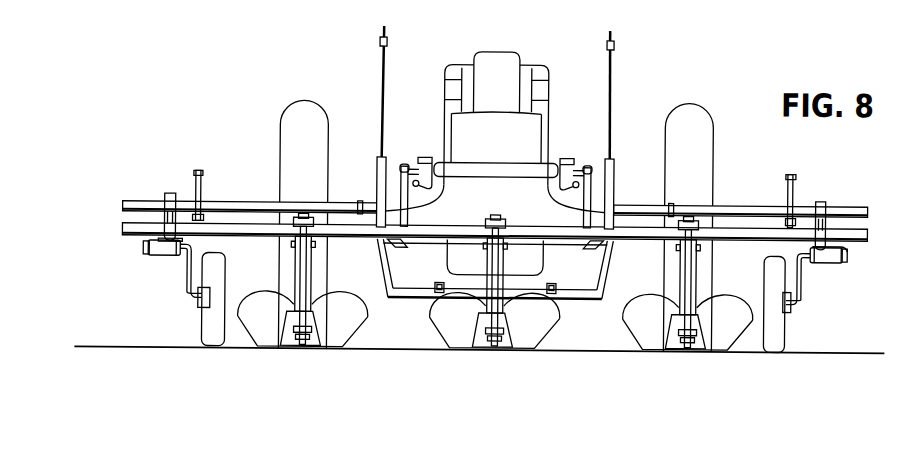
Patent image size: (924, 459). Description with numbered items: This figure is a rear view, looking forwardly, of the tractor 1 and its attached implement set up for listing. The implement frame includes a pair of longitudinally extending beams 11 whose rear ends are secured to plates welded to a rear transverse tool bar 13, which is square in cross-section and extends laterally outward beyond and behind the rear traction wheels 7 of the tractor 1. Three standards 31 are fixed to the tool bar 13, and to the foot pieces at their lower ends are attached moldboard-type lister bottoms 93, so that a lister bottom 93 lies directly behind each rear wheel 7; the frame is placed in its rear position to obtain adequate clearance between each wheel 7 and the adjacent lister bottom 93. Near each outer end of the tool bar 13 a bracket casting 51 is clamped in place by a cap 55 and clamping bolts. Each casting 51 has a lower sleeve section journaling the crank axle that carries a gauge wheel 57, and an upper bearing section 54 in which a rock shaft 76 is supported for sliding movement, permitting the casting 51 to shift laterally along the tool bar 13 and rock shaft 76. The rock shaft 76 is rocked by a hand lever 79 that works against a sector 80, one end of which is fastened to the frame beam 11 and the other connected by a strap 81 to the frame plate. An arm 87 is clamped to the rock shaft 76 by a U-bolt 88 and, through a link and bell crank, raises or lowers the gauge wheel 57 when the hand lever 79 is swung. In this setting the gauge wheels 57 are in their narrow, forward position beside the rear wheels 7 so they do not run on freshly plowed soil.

The tractor 1 is at (518, 47).
The rear traction wheels 7 is at (285, 124).
The longitudinally extending beams 11 is at (390, 271).
The rear transverse tool bar 13 is at (449, 227).
The standards 31 is at (312, 268).
The bracket casting 51 is at (165, 258).
The upper bearing section 54 is at (165, 201).
The cap 55 is at (158, 241).
The gauge wheel 57 is at (202, 318).
The rock shaft 76 is at (238, 204).
The hand lever 79 is at (380, 103).
The sector 80 is at (388, 175).
The strap 81 is at (376, 188).
The arm 87 is at (196, 182).
The U-bolt 88 is at (795, 207).
The lister bottoms 93 is at (253, 305).